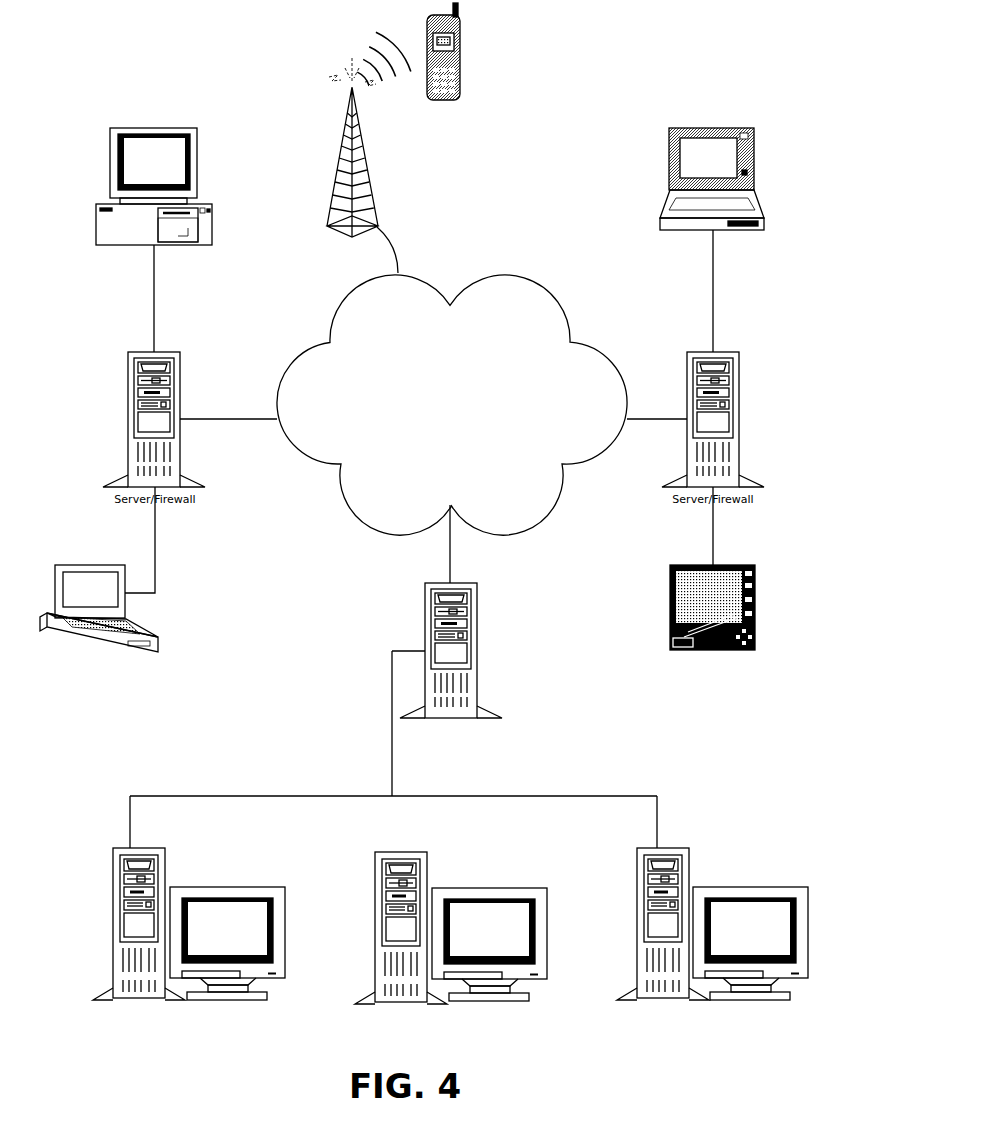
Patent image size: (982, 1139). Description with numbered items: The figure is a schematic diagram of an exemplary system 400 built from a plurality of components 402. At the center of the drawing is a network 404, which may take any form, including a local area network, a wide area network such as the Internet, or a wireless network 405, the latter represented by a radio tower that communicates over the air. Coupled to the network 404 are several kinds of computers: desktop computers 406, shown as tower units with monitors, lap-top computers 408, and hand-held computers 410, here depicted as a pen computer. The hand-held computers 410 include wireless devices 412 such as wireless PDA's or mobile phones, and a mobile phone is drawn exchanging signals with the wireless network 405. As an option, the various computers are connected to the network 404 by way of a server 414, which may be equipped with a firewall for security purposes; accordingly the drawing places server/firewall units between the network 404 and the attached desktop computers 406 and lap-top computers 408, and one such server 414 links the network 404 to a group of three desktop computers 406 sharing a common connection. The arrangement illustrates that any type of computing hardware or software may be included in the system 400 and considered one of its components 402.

The system 400 is at (655, 79).
The components 402 is at (305, 699).
The network 404 is at (497, 273).
The wireless network 405 is at (340, 140).
The desktop computers 406 is at (212, 214).
The lap-top computers 408 is at (668, 216).
The hand-held computers 410 is at (670, 610).
The wireless devices 412 is at (458, 37).
The server 414 is at (477, 650).